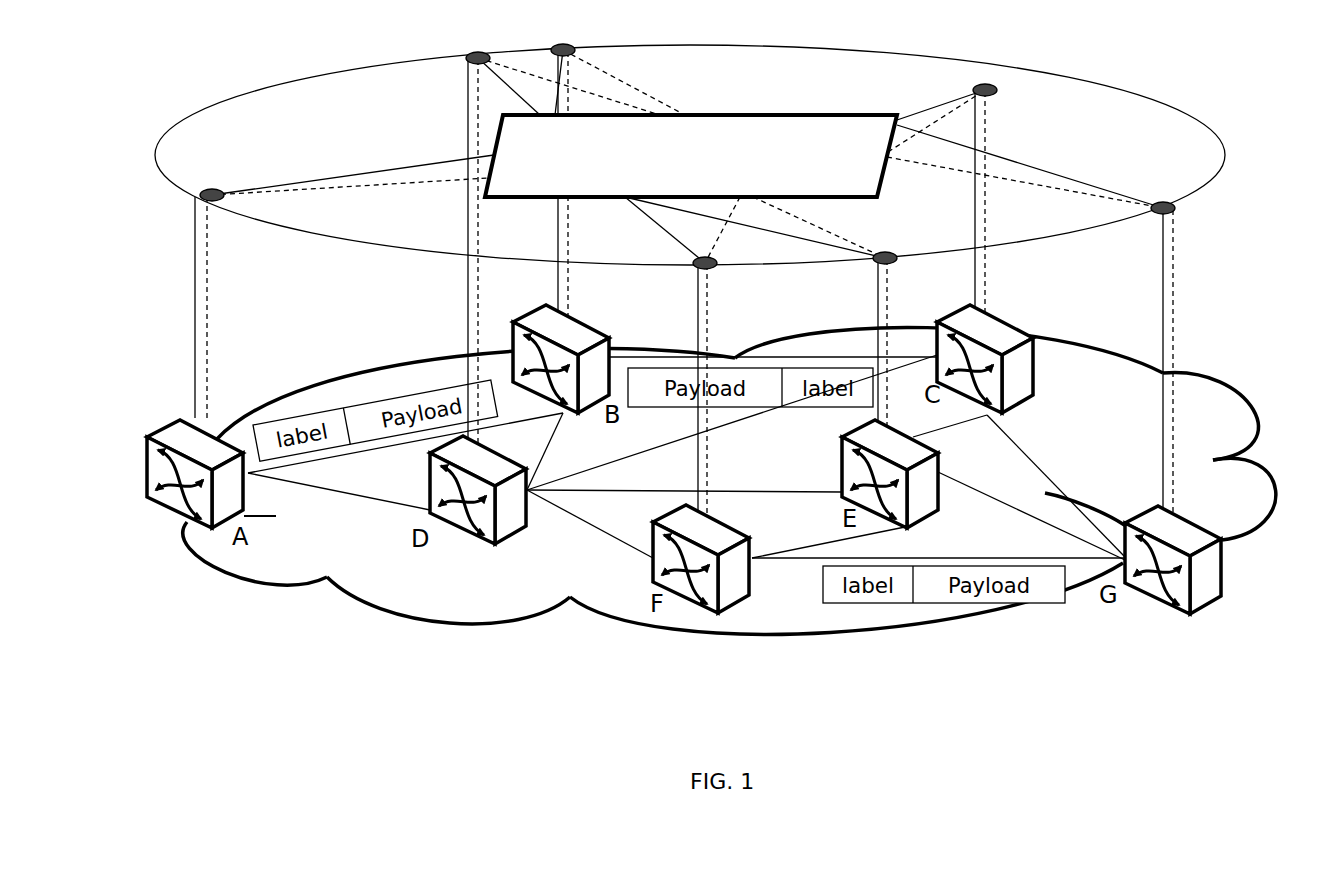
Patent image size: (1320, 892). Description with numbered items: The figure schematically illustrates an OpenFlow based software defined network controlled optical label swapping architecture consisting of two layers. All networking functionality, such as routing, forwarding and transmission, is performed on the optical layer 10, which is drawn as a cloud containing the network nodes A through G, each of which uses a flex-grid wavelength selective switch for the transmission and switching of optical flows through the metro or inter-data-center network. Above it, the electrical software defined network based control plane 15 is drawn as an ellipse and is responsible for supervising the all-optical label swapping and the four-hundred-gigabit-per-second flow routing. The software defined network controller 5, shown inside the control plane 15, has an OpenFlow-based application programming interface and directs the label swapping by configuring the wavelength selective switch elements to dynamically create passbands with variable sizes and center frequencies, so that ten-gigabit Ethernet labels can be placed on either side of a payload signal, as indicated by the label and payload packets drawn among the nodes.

The software defined network (SDN) controller 5 is at (843, 171).
The optical layer 10 is at (490, 597).
The electrical software defined network (SDN)-based control plane 15 is at (374, 137).